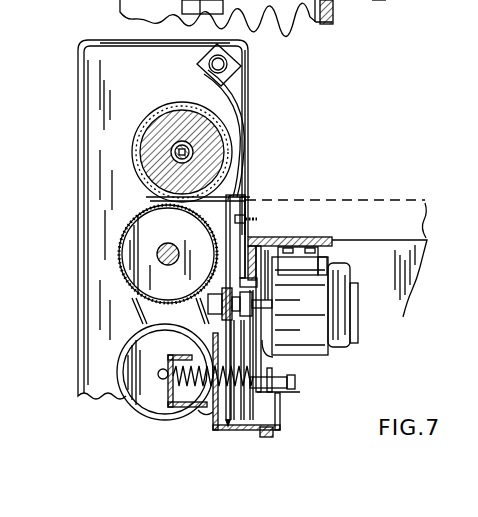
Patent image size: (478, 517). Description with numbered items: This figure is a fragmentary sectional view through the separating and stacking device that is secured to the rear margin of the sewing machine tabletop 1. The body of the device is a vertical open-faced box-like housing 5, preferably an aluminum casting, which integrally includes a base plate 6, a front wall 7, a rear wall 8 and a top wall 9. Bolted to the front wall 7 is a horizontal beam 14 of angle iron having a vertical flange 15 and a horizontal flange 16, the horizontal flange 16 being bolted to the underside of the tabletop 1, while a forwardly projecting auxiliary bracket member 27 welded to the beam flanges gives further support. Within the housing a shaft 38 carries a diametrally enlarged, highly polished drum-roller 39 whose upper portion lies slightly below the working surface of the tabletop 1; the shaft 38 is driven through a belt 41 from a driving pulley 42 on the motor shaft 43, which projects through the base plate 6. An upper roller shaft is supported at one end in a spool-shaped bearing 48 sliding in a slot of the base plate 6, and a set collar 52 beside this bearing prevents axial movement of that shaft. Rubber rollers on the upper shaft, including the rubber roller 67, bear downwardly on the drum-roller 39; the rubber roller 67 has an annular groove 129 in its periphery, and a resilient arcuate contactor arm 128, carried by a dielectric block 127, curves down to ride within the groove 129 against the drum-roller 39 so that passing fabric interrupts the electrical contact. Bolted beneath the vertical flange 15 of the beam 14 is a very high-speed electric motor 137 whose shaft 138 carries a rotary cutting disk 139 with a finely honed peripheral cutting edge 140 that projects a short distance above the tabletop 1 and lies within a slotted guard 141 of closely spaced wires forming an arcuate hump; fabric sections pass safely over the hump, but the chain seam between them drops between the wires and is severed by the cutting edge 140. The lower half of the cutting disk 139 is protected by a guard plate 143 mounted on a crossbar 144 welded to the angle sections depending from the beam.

The tabletop 1 is at (368, 203).
The housing 5 is at (91, 79).
The base plate 6 is at (103, 60).
The front wall 7 is at (248, 87).
The rear wall 8 is at (78, 172).
The top wall 9 is at (117, 38).
The horizontal beam 14 is at (315, 235).
The vertical flange 15 is at (256, 236).
The horizontal flange 16 is at (290, 240).
The auxiliary bracket member 27 is at (416, 279).
The shaft 38 is at (158, 258).
The drum-roller 39 is at (146, 198).
The belt 41 is at (133, 312).
The driving pulley 42 is at (123, 352).
The motor shaft 43 is at (162, 379).
The spool-shaped bearing 48 is at (337, 7).
The set collar 52 is at (382, 4).
The rubber roller 67 is at (150, 128).
The dielectric block 127 is at (232, 62).
The contactor arm 128 is at (240, 117).
The annular groove 129 is at (226, 148).
The electric motor 137 is at (349, 345).
The shaft 138 is at (252, 303).
The rotary cutting disk 139 is at (254, 358).
The cutting edge 140 is at (242, 196).
The slotted guard 141 is at (250, 190).
The guard plate 143 is at (213, 430).
The crossbar 144 is at (280, 426).